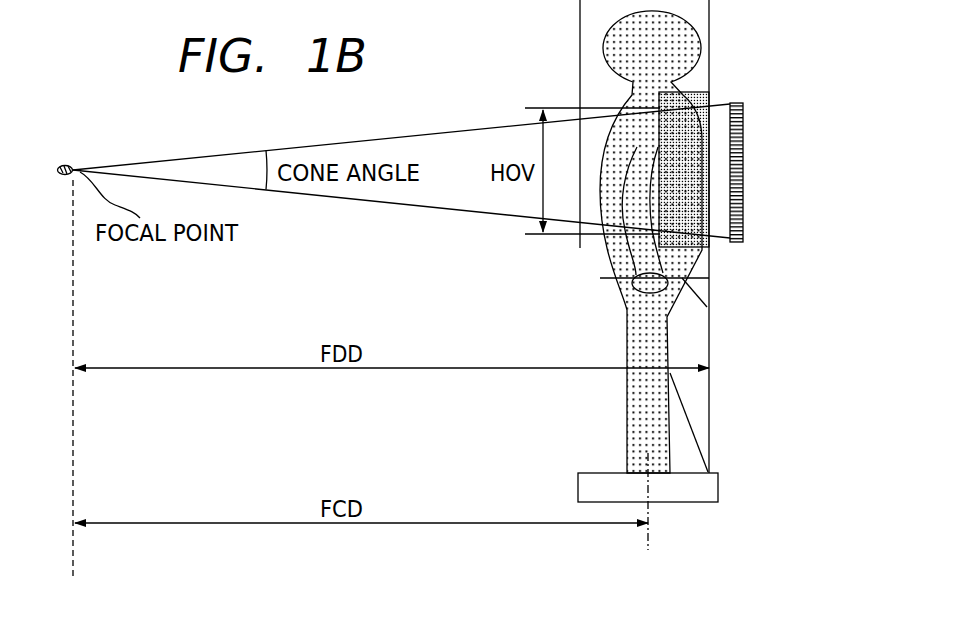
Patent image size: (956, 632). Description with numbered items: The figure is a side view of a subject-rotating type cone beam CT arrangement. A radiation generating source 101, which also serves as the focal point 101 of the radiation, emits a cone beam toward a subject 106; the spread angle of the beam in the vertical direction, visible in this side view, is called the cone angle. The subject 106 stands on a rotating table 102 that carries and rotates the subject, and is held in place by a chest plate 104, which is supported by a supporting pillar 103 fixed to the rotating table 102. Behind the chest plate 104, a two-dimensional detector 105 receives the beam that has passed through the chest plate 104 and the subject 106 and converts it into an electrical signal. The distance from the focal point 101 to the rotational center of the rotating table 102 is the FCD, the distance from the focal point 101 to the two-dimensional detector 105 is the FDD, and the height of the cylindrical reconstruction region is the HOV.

The radiation generating source 101 is at (71, 162).
The rotating table 102 is at (720, 490).
The support column 103 is at (711, 344).
The chest plate 104 is at (706, 95).
The two-dimensional detector 105 is at (745, 142).
The subject 106 is at (684, 37).